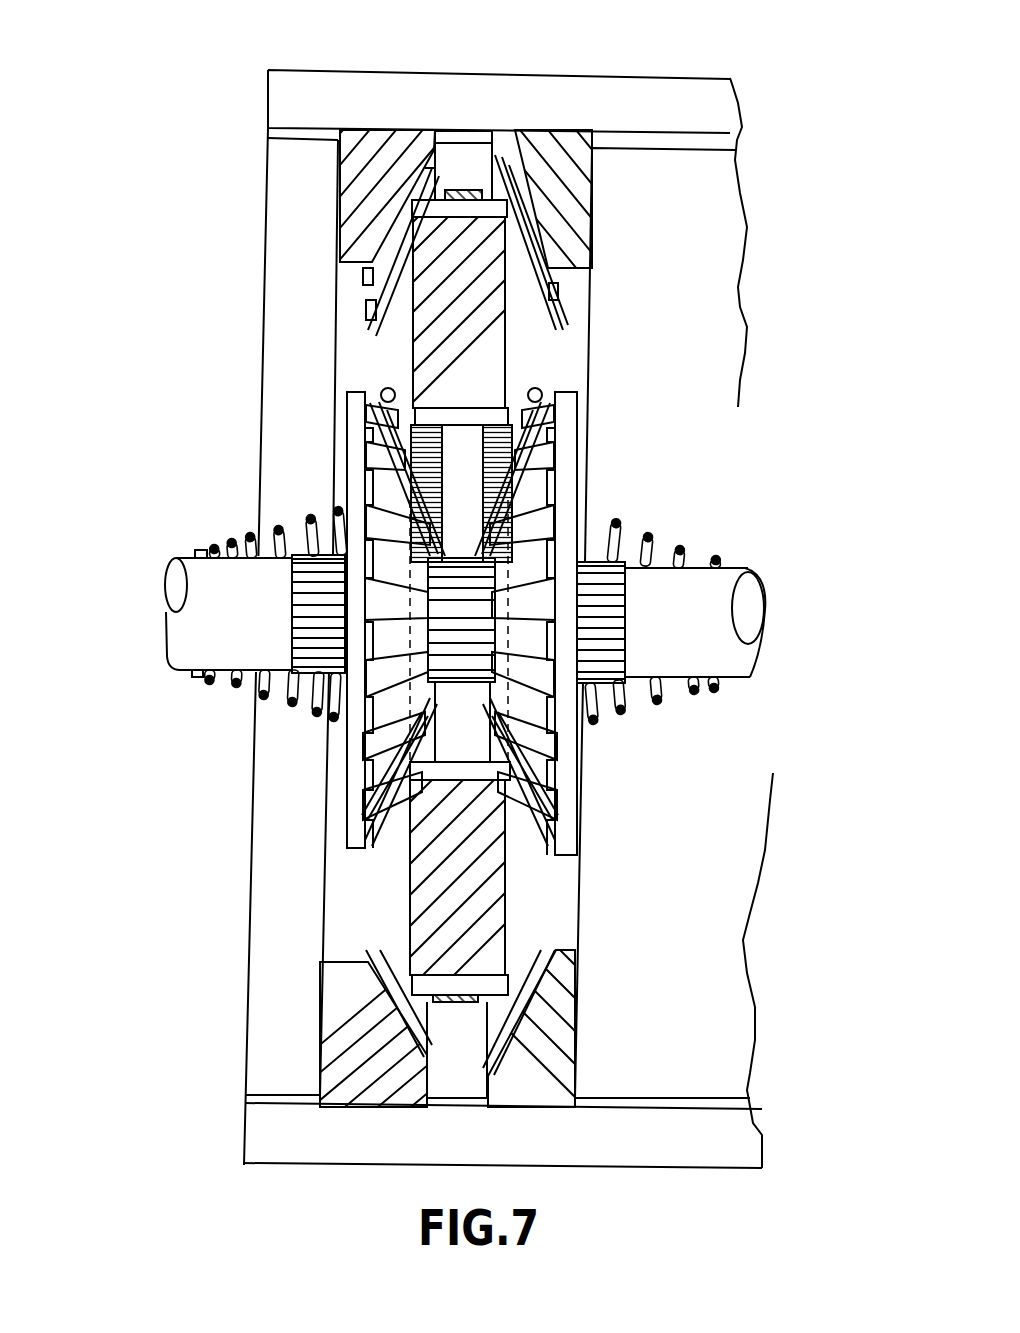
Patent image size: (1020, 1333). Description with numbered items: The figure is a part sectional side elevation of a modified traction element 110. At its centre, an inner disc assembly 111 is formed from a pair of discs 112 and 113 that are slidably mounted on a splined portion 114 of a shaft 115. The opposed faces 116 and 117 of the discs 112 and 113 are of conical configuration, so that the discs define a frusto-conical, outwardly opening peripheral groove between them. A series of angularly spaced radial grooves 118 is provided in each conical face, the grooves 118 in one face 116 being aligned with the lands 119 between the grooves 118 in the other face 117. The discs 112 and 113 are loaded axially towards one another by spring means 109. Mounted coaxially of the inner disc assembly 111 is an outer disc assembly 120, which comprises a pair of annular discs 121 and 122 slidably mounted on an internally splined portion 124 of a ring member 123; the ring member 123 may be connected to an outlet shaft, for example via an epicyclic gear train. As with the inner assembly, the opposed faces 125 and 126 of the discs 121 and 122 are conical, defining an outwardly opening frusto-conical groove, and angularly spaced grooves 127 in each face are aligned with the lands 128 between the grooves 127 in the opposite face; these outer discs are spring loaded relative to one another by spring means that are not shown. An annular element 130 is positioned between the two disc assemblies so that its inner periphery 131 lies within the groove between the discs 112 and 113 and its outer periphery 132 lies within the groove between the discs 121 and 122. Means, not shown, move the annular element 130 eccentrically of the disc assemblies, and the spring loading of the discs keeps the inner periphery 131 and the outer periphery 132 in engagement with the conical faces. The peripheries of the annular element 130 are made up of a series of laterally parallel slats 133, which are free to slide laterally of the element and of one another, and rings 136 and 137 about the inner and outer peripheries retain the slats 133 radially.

The spring means 109 is at (230, 548).
The modified traction element 110 is at (213, 856).
The inner disc assembly 111 is at (325, 741).
The disc 112 is at (362, 430).
The disc 113 is at (565, 460).
The splined portion 114 is at (620, 705).
The shaft 115 is at (190, 644).
The opposed face 116 is at (381, 394).
The opposed face 117 is at (542, 392).
The radial grooves 118 is at (548, 558).
The lands 119 is at (362, 550).
The outer disc assembly 120 is at (300, 1054).
The annular disc 121 is at (357, 195).
The annular disc 122 is at (582, 200).
The ring member 123 is at (318, 88).
The internally splined portion 124 is at (260, 132).
The opposed face 125 is at (380, 263).
The opposed face 126 is at (545, 270).
The grooves 127 is at (556, 338).
The lands 128 is at (547, 893).
The annular element 130 is at (490, 302).
The inner periphery 131 is at (537, 430).
The outer periphery 132 is at (446, 200).
The slats 133 is at (465, 773).
The ring 136 is at (467, 717).
The ring 137 is at (468, 190).